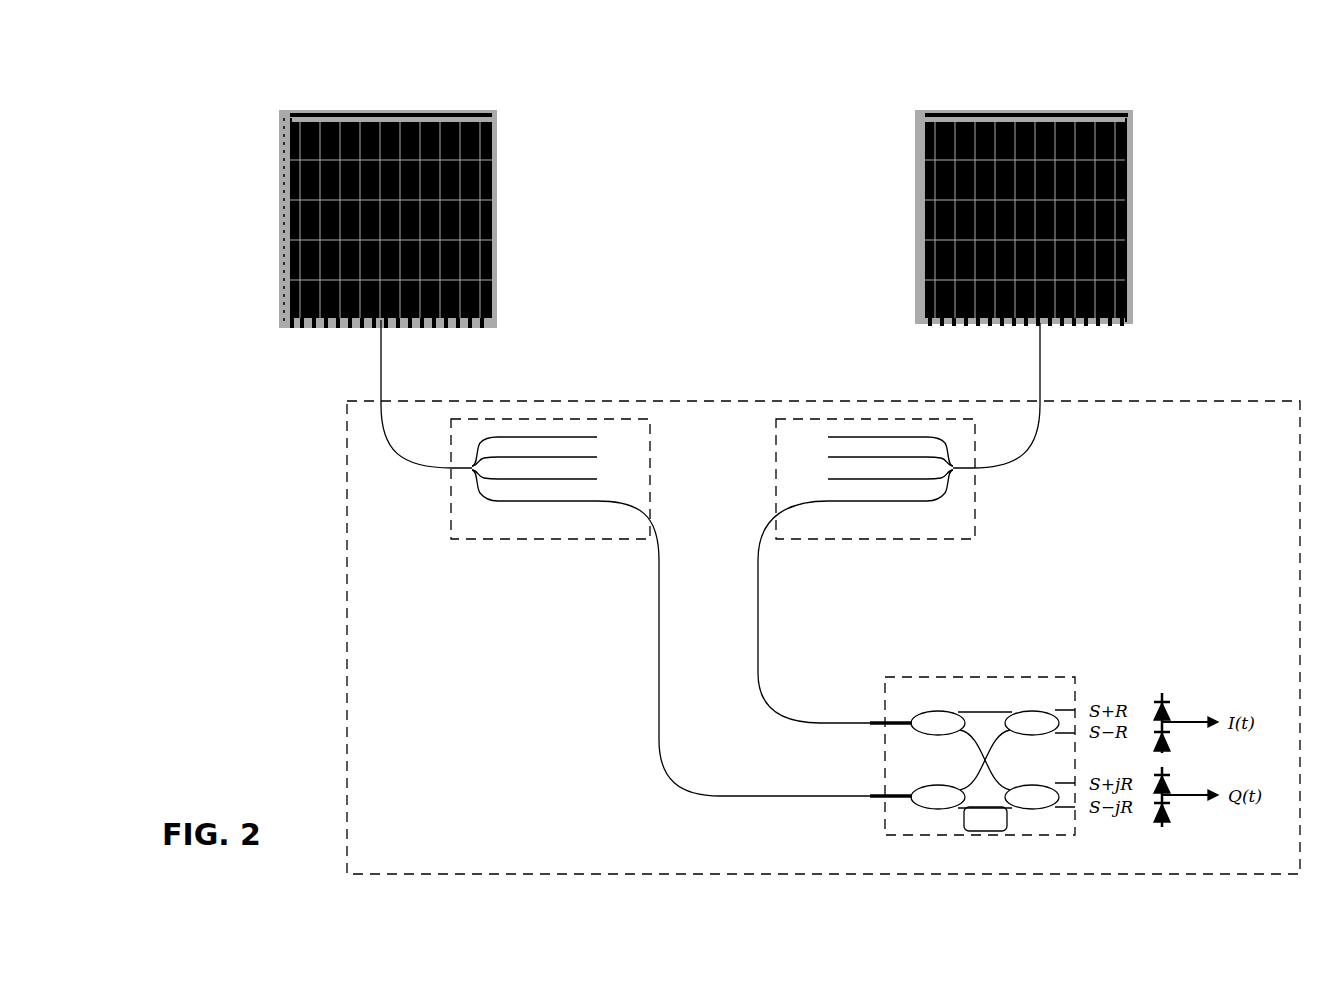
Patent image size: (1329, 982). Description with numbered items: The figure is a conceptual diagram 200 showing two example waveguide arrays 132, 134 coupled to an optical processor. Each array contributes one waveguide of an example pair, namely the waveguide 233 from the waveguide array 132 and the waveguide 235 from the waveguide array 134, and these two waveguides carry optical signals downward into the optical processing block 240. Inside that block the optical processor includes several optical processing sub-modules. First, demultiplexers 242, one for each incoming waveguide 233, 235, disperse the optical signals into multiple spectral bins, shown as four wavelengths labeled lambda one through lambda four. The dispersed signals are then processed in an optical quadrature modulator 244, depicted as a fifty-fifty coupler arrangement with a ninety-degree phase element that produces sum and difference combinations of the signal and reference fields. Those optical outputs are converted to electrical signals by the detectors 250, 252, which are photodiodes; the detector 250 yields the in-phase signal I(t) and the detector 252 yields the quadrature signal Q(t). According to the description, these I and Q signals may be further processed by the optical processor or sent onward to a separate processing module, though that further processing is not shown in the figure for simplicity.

The conceptual diagram 200 is at (258, 57).
The waveguide array 132 is at (496, 190).
The waveguide array 134 is at (916, 192).
The waveguide 233 is at (383, 366).
The waveguide 235 is at (1038, 366).
The coherent receiver 240 is at (434, 845).
The demultiplexer 242 is at (507, 533).
The optical quadrature modulator 244 is at (927, 700).
The detector 250 is at (1180, 691).
The detector 252 is at (1182, 835).